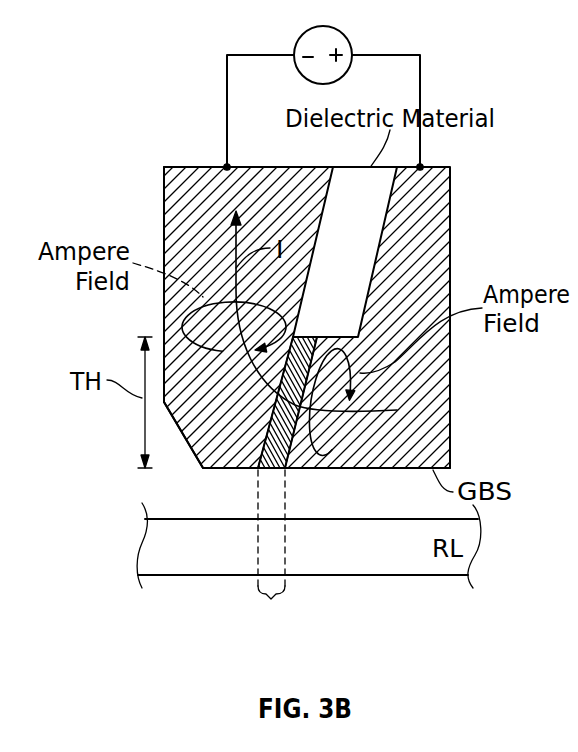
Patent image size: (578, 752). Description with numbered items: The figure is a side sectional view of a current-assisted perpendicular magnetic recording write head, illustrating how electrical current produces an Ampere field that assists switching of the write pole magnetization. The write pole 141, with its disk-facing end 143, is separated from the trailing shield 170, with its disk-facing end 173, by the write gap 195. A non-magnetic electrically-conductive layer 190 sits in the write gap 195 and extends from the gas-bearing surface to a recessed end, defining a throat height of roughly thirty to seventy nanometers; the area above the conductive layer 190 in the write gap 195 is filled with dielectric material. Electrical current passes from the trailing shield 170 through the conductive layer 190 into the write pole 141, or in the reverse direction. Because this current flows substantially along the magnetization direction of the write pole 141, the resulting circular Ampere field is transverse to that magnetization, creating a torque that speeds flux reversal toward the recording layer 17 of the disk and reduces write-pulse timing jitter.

The trailing magnetic shield 170 is at (435, 395).
The electrically-conductive layer 190 is at (313, 335).
The write gap 195 is at (286, 481).
The write pole 141 is at (164, 295).
The disk-facing end of write pole 143 is at (205, 472).
The disk-facing end of trailing shield 173 is at (345, 470).
The recording layer 17 is at (138, 548).